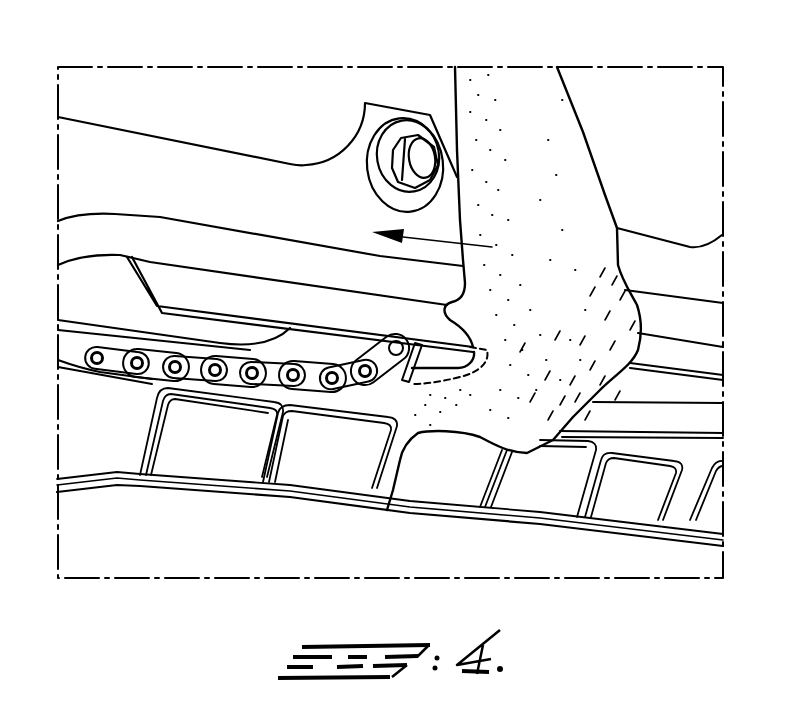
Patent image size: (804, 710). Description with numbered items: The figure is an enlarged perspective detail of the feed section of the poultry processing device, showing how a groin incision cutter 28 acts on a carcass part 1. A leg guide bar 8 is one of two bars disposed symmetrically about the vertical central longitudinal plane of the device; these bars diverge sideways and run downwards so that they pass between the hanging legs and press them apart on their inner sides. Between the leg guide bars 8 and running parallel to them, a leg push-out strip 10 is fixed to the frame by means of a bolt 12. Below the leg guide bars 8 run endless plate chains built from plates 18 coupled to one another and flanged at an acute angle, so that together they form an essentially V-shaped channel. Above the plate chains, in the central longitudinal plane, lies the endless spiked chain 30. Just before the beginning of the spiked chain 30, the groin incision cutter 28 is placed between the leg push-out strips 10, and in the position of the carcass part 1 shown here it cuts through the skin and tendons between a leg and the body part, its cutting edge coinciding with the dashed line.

The carcass part 1 is at (560, 152).
The leg guide bar 8 is at (267, 252).
The leg push-out strip 10 is at (207, 168).
The bolt 12 is at (397, 152).
The plate 18 is at (208, 450).
The groin incision cutter 28 is at (428, 350).
The spiked chain 30 is at (155, 363).